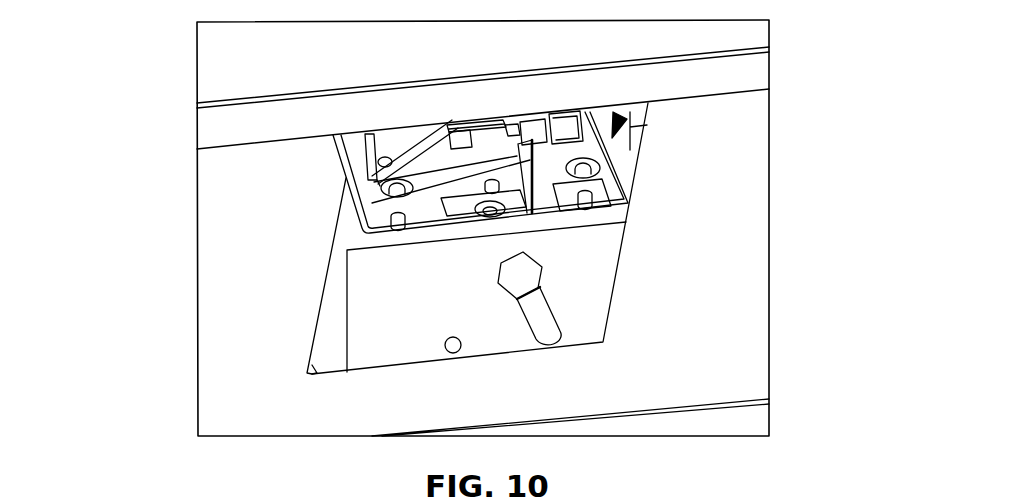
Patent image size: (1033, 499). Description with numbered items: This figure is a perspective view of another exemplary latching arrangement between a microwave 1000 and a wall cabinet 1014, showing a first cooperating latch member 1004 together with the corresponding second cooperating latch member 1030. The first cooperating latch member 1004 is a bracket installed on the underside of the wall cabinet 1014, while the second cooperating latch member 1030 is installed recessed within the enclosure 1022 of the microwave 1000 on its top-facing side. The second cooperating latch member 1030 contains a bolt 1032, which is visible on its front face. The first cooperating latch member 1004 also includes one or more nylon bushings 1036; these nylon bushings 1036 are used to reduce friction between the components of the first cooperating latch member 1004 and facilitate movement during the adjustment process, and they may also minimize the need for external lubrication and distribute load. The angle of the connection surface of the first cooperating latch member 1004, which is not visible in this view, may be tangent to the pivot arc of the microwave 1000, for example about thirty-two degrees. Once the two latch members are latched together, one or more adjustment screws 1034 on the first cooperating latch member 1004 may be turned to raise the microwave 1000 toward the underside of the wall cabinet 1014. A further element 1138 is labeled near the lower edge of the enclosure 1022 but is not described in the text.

The microwave 1000 is at (191, 368).
The first cooperating latch member 1004 is at (617, 113).
The wall cabinet 1014 is at (283, 139).
The enclosure 1022 is at (213, 282).
The second cooperating latch member 1030 is at (598, 240).
The bolt 1032 is at (520, 277).
The adjustment screws 1034 is at (491, 200).
The nylon bushings 1036 is at (367, 203).
The lower panel 1138 is at (236, 498).